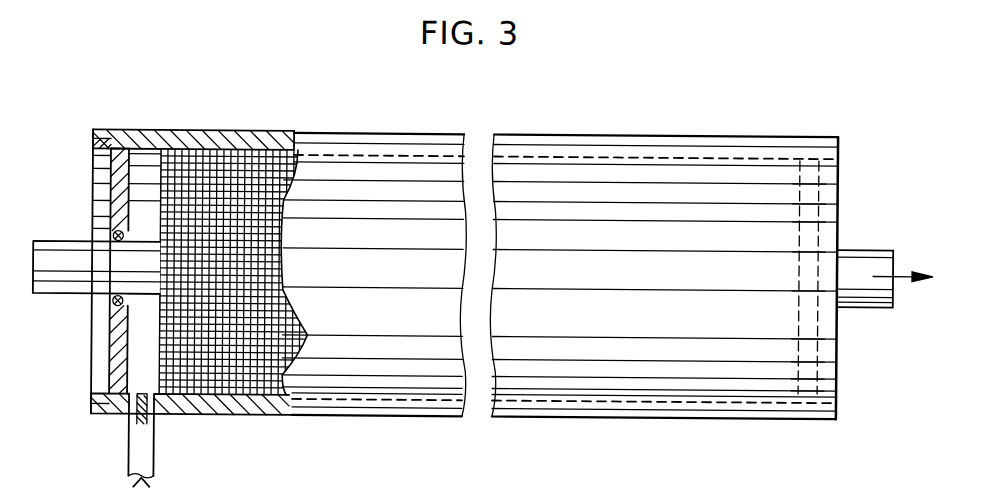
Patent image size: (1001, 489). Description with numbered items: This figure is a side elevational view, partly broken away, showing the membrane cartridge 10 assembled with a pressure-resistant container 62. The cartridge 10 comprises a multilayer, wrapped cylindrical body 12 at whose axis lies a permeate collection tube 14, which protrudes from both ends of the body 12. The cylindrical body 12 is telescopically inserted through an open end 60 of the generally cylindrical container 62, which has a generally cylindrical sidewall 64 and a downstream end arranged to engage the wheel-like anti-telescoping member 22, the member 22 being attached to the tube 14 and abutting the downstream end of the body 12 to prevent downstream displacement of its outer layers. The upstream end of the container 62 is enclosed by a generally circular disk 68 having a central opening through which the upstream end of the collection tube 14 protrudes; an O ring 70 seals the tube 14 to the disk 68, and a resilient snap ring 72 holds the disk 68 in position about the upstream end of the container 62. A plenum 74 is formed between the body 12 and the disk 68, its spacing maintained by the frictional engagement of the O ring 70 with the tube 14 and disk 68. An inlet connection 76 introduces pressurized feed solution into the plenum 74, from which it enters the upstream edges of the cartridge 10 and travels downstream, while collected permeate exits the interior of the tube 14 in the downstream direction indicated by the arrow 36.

The membrane cartridge 10 is at (264, 146).
The cylindrical body 12 is at (264, 416).
The permeate collection tube 14 is at (60, 247).
The wheel-like anti-telescoping member 22 is at (818, 196).
The permeate flow arrow 36 is at (880, 258).
The open end 60 is at (143, 364).
The pressure-resistant container 62 is at (529, 132).
The cylindrical sidewall 64 is at (205, 138).
The circular disk 68 is at (110, 337).
The O ring 70 is at (108, 305).
The resilient snap ring 72 is at (92, 400).
The plenum 74 is at (143, 167).
The inlet connection 76 is at (157, 449).